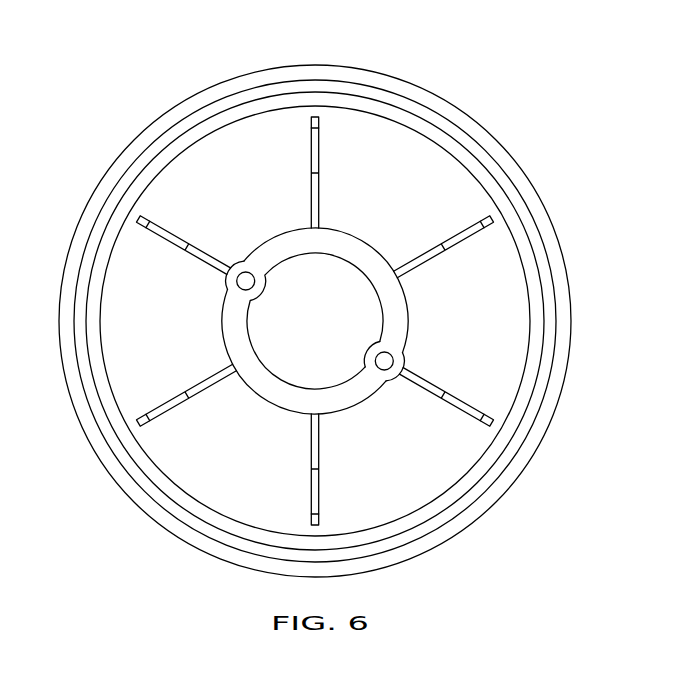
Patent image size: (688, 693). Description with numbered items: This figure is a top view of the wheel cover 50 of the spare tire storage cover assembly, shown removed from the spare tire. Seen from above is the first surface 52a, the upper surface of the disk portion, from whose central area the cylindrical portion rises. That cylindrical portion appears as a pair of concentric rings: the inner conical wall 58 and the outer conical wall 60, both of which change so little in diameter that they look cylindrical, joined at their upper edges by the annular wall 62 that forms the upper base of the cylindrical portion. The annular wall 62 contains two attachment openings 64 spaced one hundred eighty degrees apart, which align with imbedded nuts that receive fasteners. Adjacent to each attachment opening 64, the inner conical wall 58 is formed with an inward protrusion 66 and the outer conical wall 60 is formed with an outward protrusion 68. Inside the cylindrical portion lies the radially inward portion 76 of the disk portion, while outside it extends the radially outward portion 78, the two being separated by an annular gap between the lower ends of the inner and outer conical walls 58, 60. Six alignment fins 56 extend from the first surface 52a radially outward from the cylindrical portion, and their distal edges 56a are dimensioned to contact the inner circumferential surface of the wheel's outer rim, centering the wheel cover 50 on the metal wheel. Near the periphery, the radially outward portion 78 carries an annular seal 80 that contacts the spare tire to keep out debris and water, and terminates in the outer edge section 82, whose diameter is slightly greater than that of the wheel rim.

The wheel cover 50 is at (115, 86).
The first surface 52a is at (390, 157).
The alignment fins 56 is at (311, 152).
The distal edges 56a is at (141, 226).
The inner conical wall 58 is at (297, 386).
The outer conical wall 60 is at (262, 399).
The annular wall 62 is at (332, 245).
The attachment openings 64 is at (245, 283).
The inward protrusions 66 is at (363, 361).
The outward protrusions 68 is at (241, 262).
The radially inward portion 76 is at (337, 292).
The radially outward portion 78 is at (493, 322).
The annular seal 80 is at (477, 495).
The outer edge section 82 is at (433, 548).